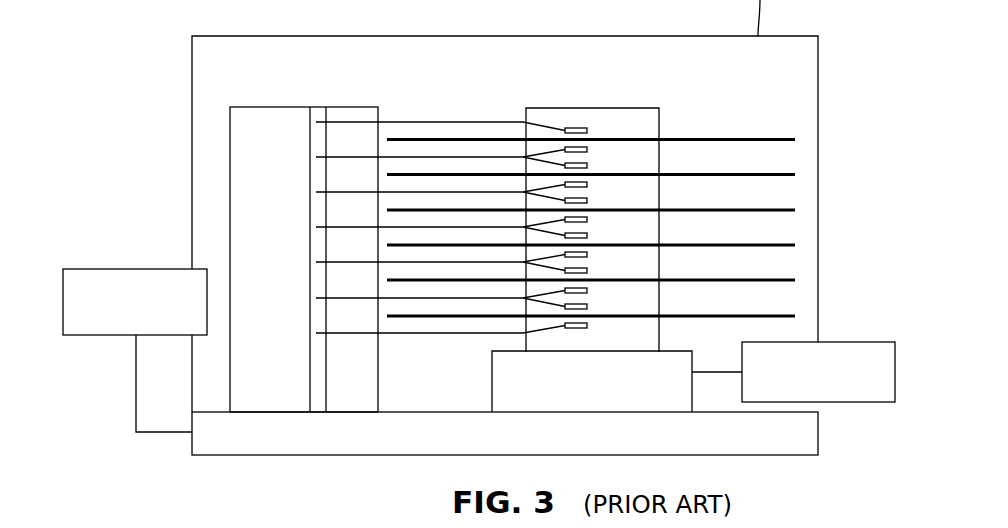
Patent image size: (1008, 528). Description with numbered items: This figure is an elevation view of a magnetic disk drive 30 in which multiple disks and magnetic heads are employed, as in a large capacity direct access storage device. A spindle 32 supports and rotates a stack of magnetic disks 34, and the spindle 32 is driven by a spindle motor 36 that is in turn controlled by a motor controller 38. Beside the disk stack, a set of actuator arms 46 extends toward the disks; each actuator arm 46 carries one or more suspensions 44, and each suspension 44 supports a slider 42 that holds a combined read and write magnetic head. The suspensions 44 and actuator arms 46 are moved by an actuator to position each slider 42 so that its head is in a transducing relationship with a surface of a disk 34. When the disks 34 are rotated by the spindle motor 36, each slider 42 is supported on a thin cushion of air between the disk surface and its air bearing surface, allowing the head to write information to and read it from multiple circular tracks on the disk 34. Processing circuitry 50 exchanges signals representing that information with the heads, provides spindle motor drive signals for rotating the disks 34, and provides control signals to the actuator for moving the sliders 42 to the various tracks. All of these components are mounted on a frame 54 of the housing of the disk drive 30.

The magnetic disk drive 30 is at (704, 114).
The spindle 32 is at (645, 108).
The magnetic disk 34 is at (795, 140).
The spindle motor 36 is at (592, 381).
The motor controller 38 is at (853, 403).
The slider 42 is at (605, 143).
The suspension 44 is at (558, 131).
The actuator arm 46 is at (523, 157).
The processing circuitry 50 is at (105, 268).
The frame 54 is at (247, 456).